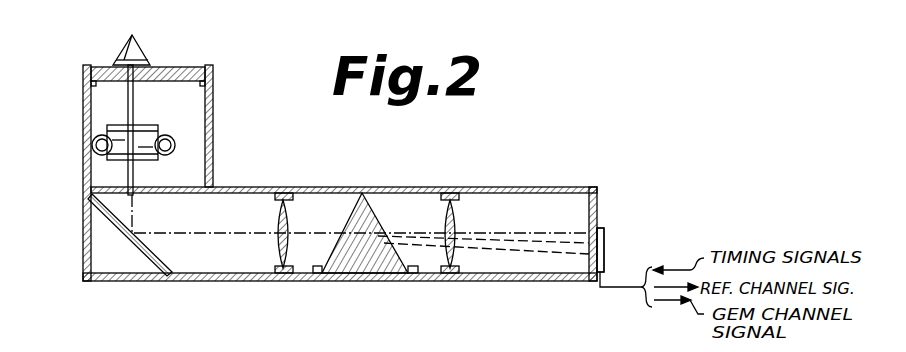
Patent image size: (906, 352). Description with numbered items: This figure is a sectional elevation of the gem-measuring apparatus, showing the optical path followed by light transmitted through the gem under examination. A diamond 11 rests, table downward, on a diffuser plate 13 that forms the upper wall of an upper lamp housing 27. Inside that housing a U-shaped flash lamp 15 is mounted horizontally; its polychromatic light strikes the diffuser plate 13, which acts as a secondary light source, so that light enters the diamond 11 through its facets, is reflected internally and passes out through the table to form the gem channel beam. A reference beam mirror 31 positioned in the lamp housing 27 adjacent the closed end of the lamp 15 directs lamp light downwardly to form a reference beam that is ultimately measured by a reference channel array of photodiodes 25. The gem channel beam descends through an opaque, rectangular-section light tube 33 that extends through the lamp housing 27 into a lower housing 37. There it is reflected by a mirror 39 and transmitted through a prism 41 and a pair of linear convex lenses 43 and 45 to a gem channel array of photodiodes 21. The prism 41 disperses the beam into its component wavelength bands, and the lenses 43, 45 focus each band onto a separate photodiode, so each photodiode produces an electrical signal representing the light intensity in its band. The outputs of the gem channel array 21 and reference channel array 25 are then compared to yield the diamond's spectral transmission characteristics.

The diamond 11 is at (140, 50).
The diffuser plate 13 is at (188, 71).
The U-shaped flash lamp 15 is at (148, 143).
The gem channel array of photodiodes 21 is at (603, 232).
The reference channel array of photodiodes 25 is at (600, 250).
The lamp housing 27 is at (213, 103).
The reference beam mirror 31 is at (113, 128).
The light tube 33 is at (128, 171).
The lower housing 37 is at (336, 187).
The mirror 39 is at (143, 257).
The prism 41 is at (367, 258).
The convex lens 43 is at (276, 243).
The convex lens 45 is at (458, 235).